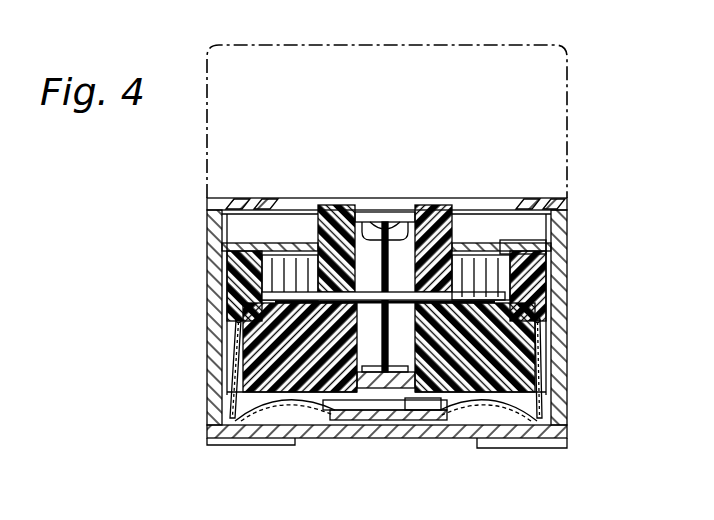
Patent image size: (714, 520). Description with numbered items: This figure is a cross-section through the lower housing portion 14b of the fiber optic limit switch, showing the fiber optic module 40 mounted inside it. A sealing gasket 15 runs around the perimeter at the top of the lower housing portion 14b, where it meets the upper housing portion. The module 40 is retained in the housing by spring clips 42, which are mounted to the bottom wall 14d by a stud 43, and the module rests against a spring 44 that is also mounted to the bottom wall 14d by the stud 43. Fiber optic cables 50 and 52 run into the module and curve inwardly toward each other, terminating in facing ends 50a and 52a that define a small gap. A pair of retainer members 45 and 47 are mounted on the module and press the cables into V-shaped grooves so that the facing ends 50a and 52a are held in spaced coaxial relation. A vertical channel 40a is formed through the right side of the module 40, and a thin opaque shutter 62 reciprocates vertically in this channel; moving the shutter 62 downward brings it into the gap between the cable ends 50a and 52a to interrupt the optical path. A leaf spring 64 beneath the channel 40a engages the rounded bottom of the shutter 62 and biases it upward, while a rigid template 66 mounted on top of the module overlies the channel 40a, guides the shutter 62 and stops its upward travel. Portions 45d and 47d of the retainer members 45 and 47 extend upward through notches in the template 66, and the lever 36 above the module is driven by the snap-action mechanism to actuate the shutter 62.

The sealing gasket 15 is at (222, 203).
The lower housing portion 14b is at (556, 270).
The bottom wall 14d is at (318, 438).
The retainer member 47 is at (235, 262).
The retainer member portion 47d is at (335, 207).
The retainer member 45 is at (468, 258).
The retainer member portion 45d is at (437, 207).
The lever 36 is at (398, 212).
The shutter 62 is at (366, 214).
The fiber optic cable 52 is at (262, 296).
The fiber optic cable 50 is at (508, 292).
The facing end 52a is at (325, 312).
The facing end 50a is at (410, 308).
The template 66 is at (551, 246).
The fiber optic module 40 is at (524, 317).
The vertical channel 40a is at (355, 418).
The spring clips 42 is at (230, 410).
The stud 43 is at (394, 425).
The spring 44 is at (312, 425).
The leaf spring 64 is at (425, 418).